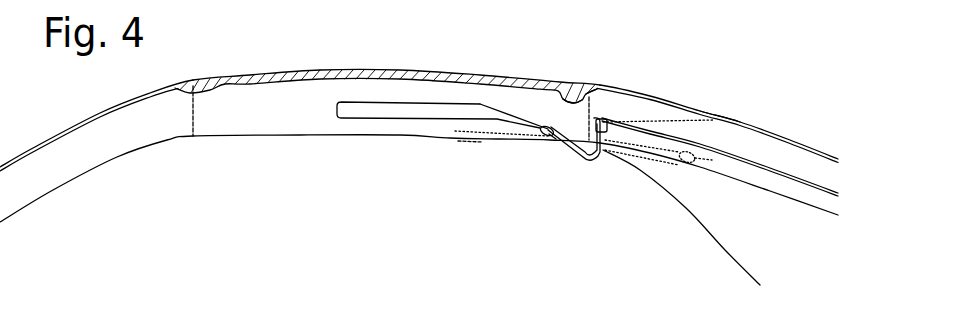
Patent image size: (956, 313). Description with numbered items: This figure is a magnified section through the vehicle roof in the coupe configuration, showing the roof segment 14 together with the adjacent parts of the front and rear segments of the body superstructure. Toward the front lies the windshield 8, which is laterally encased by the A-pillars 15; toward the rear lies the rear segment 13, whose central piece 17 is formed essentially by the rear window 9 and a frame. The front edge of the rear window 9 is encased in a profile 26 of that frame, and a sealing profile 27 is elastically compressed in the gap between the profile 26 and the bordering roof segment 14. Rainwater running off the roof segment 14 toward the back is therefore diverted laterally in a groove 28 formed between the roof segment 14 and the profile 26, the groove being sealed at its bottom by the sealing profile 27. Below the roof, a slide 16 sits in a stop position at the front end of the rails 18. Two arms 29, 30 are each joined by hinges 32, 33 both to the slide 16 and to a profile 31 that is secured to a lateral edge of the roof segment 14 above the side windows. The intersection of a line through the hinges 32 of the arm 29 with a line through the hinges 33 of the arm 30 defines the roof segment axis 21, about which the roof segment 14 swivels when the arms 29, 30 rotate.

The windshield 8 is at (63, 128).
The rear window 9 is at (777, 138).
The rear segment 13 is at (719, 122).
The roof segment 14 is at (273, 80).
The A-pillar 15 is at (50, 172).
The slide 16 is at (650, 137).
The central piece 17 is at (750, 91).
The rails 18 is at (783, 190).
The roof segment axis 21 is at (520, 138).
The profile 26 is at (597, 92).
The sealing profile 27 is at (577, 97).
The groove 28 is at (590, 97).
The arm 29 is at (615, 150).
The arm 30 is at (580, 153).
The profile 31 is at (435, 110).
The hinges 32 is at (558, 138).
The hinges 33 is at (550, 133).